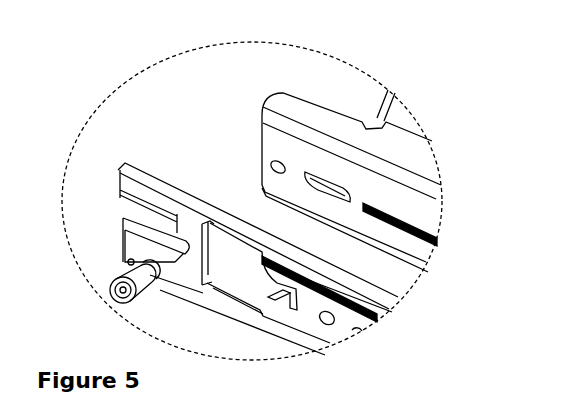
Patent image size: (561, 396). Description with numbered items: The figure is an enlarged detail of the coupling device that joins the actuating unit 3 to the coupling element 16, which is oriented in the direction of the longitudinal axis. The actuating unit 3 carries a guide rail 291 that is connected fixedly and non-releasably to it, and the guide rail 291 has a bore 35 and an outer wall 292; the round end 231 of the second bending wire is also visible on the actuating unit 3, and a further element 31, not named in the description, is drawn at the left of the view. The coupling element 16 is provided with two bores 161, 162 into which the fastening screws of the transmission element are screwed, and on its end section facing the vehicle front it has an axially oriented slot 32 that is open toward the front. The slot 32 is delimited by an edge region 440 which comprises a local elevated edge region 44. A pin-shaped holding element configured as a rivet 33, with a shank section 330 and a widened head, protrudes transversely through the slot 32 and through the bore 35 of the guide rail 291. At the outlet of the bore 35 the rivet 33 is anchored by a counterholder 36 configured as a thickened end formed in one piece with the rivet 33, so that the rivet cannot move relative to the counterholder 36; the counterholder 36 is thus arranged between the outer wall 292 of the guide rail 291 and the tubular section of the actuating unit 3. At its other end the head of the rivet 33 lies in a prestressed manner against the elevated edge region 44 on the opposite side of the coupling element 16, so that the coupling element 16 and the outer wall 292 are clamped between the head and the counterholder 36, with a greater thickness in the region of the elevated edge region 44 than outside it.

The actuating unit 3 is at (352, 112).
The guide rail 291 is at (307, 113).
The outer wall 292 is at (287, 157).
The bore 35 is at (274, 158).
The round end 231 is at (357, 200).
The guide bar 31 is at (128, 183).
The slot 32 is at (153, 212).
The edge region 440 is at (150, 214).
The rivet 33 is at (112, 304).
The shank section 330 is at (157, 308).
The counterholder 36 is at (260, 250).
The elevated edge region 44 is at (193, 262).
The coupling element 16 is at (320, 278).
The bore 161 is at (323, 322).
The bore 162 is at (358, 332).